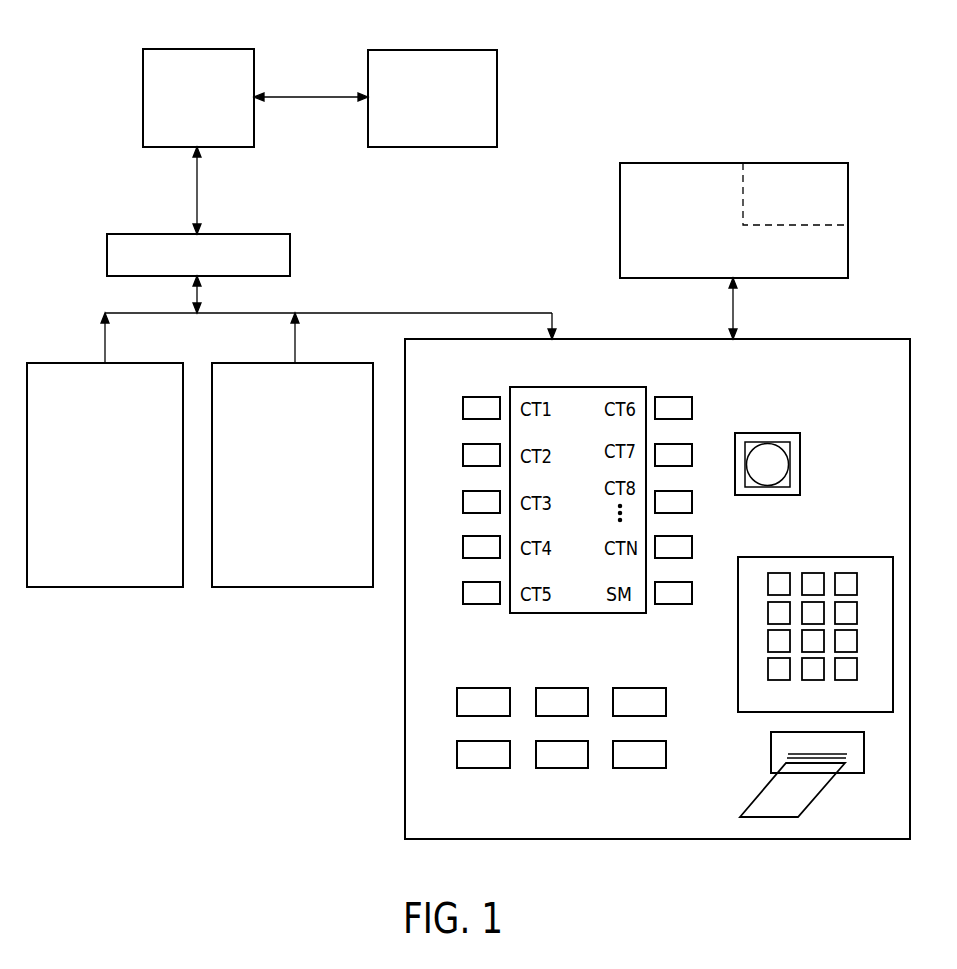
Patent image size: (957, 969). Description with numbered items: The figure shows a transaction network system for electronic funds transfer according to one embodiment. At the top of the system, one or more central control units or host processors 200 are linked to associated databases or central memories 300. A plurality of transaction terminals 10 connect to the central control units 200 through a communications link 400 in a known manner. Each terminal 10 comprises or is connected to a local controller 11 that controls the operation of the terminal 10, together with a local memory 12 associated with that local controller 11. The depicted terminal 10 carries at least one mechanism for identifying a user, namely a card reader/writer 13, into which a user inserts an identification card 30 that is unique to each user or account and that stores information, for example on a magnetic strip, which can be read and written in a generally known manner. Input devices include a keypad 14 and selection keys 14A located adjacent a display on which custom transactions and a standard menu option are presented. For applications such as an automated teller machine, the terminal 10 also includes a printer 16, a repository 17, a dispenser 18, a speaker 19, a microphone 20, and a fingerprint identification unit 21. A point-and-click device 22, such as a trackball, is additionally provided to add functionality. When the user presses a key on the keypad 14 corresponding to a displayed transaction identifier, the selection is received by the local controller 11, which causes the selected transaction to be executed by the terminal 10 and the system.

The central control unit 200 is at (219, 48).
The central memory 300 is at (443, 49).
The communications link 400 is at (240, 233).
The transaction terminal 10 is at (145, 362).
The local controller 11 is at (667, 162).
The local memory 12 is at (800, 162).
The card reader/writer 13 is at (771, 752).
The keypad 14 is at (812, 556).
The selection keys 14A is at (481, 385).
The printer 16 is at (482, 769).
The repository 17 is at (560, 769).
The dispenser 18 is at (637, 769).
The speaker 19 is at (483, 688).
The microphone 20 is at (561, 688).
The fingerprint identification unit 21 is at (638, 688).
The point-and-click device 22 is at (768, 432).
The ID card 30 is at (768, 782).